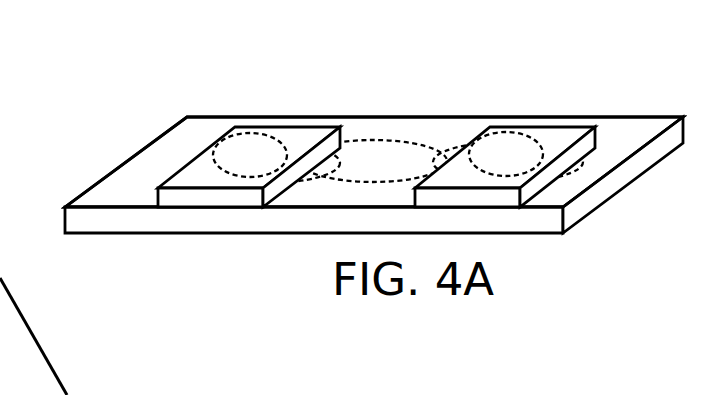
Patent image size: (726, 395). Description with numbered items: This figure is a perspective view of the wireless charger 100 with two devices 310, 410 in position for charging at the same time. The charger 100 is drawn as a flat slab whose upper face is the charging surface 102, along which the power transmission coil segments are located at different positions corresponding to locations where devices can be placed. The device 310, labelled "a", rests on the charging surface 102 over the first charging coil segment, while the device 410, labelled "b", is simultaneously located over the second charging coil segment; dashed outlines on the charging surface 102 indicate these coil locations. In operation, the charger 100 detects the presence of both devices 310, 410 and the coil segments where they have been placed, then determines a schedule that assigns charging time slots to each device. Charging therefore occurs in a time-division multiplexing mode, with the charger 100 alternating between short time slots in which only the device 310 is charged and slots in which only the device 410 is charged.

The wireless charger 100 is at (193, 117).
The charging surface 102 is at (643, 132).
The device 310 is at (312, 138).
The device 410 is at (570, 138).